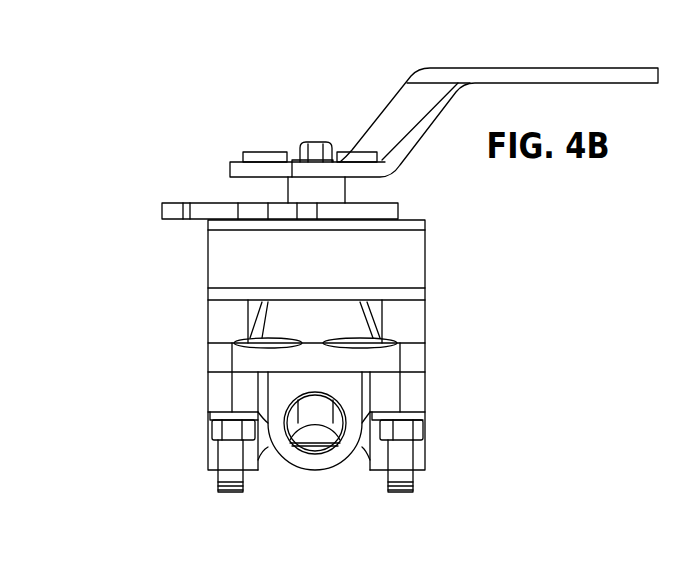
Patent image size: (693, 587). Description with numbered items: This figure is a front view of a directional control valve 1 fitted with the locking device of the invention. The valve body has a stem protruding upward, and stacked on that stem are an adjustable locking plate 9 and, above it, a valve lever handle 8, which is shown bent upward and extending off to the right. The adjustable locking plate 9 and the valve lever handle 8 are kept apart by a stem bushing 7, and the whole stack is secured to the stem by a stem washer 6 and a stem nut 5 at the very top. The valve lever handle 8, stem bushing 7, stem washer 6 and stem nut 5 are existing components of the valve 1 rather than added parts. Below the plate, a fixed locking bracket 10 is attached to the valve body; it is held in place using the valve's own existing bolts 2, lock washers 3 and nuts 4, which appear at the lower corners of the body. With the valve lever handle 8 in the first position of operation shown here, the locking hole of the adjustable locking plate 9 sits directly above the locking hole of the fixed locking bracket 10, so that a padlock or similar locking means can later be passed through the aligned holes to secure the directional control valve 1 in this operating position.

The directional control valve 1 is at (412, 360).
The bolts 2 is at (230, 467).
The lock washers 3 is at (420, 417).
The nuts 4 is at (403, 435).
The stem nut 5 is at (300, 146).
The stem washer 6 is at (336, 160).
The stem bushing 7 is at (300, 192).
The valve lever handle 8 is at (410, 108).
The adjustable locking plate 9 is at (177, 207).
The fixed locking bracket 10 is at (223, 253).